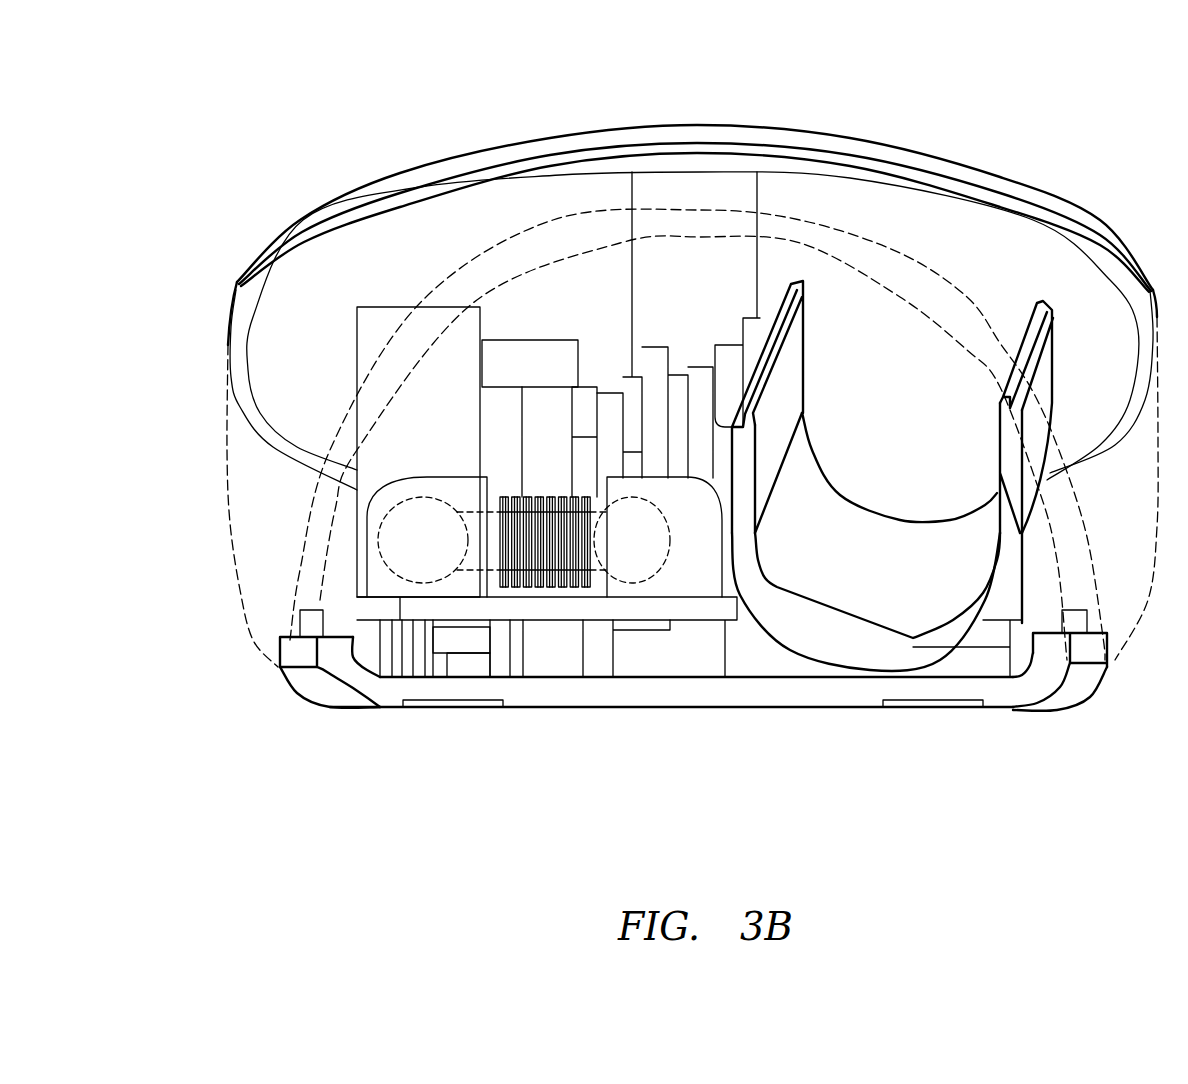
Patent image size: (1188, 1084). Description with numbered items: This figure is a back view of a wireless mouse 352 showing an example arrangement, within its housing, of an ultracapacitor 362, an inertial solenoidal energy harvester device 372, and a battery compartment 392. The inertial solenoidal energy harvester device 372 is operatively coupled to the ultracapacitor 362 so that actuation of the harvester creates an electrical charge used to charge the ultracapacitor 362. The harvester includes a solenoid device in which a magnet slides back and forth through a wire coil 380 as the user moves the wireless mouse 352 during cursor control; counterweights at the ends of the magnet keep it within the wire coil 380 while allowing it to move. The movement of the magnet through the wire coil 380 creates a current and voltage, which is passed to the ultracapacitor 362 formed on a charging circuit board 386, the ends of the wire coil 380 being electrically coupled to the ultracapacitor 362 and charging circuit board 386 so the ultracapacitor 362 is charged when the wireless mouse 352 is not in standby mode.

The wireless mouse 352 is at (232, 91).
The ultracapacitor 362 is at (387, 435).
The inertial solenoidal energy harvester device 372 is at (515, 608).
The wire coil 380 is at (553, 590).
The charging circuit board 386 is at (367, 607).
The battery compartment 392 is at (923, 590).